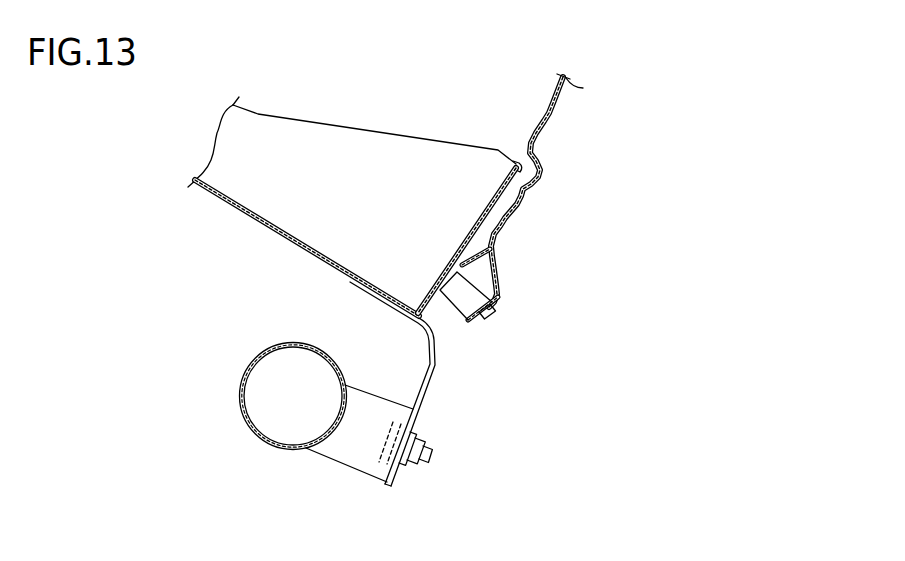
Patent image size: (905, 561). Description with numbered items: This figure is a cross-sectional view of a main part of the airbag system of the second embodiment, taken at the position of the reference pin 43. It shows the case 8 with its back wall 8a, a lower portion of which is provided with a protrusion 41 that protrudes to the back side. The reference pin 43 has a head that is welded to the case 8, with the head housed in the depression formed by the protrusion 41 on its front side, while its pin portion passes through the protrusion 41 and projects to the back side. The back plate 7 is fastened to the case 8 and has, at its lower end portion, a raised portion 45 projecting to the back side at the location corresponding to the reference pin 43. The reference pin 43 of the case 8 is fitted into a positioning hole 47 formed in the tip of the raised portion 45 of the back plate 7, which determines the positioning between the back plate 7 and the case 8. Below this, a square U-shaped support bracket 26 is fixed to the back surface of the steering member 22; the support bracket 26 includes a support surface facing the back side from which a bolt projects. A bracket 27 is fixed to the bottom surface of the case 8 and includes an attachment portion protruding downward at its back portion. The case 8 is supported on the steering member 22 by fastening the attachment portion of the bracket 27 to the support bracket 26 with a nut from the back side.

The back plate 7 is at (552, 106).
The case 8 is at (253, 221).
The back wall 8a is at (504, 187).
The steering member 22 is at (242, 382).
The support bracket 26 is at (378, 397).
The bracket 27 is at (428, 395).
The protrusion 41 is at (488, 247).
The reference pin 43 is at (488, 318).
The raised portion 45 is at (499, 298).
The positioning hole 47 is at (486, 322).